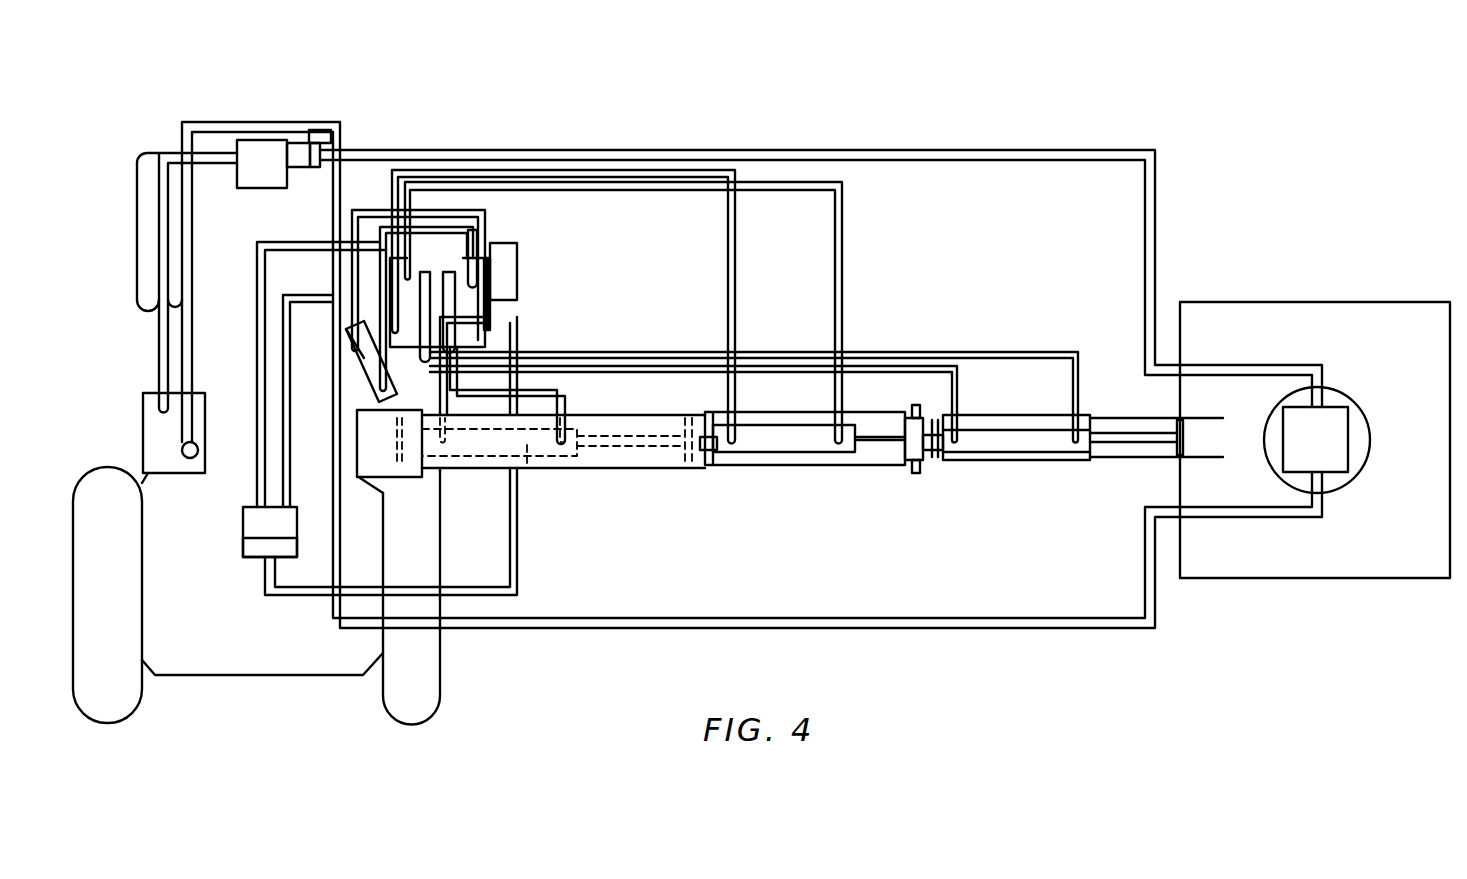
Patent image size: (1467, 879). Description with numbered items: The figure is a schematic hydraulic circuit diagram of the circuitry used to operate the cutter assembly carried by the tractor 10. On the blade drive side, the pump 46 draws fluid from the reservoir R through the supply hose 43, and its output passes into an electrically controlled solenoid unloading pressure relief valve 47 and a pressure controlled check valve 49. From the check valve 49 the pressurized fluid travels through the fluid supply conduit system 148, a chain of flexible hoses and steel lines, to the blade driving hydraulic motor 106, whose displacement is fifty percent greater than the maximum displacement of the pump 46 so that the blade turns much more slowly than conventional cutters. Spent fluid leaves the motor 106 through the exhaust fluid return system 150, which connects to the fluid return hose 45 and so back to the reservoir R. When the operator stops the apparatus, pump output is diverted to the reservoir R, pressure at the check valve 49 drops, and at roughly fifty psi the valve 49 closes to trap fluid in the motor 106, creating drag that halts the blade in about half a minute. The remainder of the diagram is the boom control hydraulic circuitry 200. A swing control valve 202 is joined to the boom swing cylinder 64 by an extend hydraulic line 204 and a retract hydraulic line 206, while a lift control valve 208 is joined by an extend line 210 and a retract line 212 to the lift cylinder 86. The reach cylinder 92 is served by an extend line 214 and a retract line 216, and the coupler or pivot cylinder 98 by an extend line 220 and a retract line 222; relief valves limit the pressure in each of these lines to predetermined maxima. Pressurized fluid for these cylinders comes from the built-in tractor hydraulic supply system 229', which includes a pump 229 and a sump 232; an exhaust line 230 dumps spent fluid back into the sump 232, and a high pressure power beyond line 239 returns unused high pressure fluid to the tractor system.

The tractor 10 is at (1250, 581).
The supply hose 43 is at (166, 360).
The fluid return hose 45 is at (273, 126).
The pump 46 is at (262, 164).
The electrically controlled solenoid unloading pressure relief valve 47 is at (298, 168).
The pressure controlled check valve 49 is at (328, 140).
The boom swing cylinder 64 is at (368, 363).
The lift cylinder 86 is at (530, 467).
The reach cylinder 92 is at (797, 438).
The coupler or pivot cylinder 98 is at (1042, 438).
The blade driving hydraulic motor 106 is at (1317, 440).
The fluid supply conduit system 148 is at (1030, 148).
The exhaust fluid return system 150 is at (832, 628).
The boom control hydraulic circuitry 200 is at (207, 117).
The swing control valve 202 is at (478, 339).
The extend hydraulic line 204 is at (357, 285).
The retract hydraulic line 206 is at (385, 258).
The lift control valve 208 is at (447, 265).
The extend line 210 is at (444, 404).
The retract line 212 is at (560, 404).
The extend line 214 is at (844, 253).
The retract line 216 is at (734, 253).
The extend line 220 is at (956, 384).
The retract line 222 is at (1056, 350).
The pump 229 is at (333, 531).
The tractor hydraulic supply system 229' is at (219, 514).
The exhaust line 230 is at (261, 486).
The sump 232 is at (250, 550).
The high pressure power beyond line 239 is at (288, 442).
The reservoir R is at (158, 427).